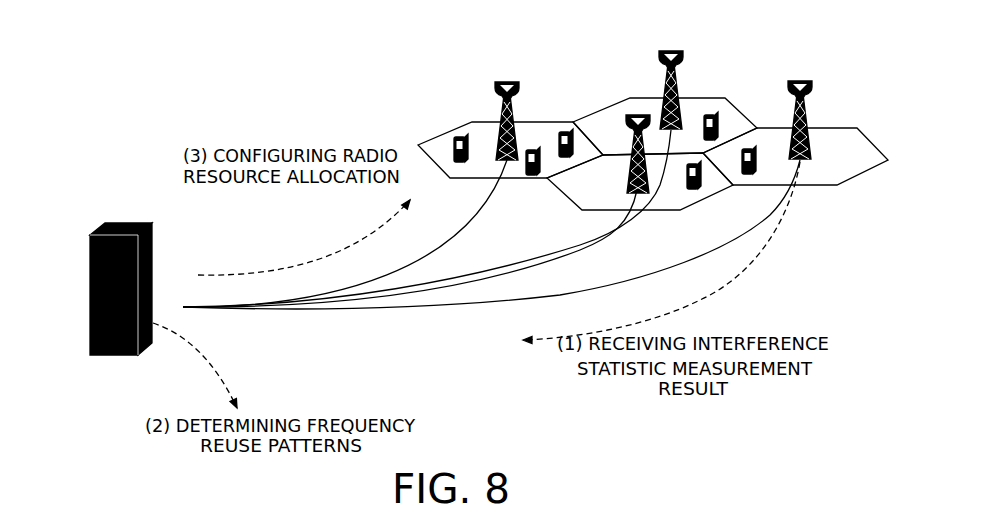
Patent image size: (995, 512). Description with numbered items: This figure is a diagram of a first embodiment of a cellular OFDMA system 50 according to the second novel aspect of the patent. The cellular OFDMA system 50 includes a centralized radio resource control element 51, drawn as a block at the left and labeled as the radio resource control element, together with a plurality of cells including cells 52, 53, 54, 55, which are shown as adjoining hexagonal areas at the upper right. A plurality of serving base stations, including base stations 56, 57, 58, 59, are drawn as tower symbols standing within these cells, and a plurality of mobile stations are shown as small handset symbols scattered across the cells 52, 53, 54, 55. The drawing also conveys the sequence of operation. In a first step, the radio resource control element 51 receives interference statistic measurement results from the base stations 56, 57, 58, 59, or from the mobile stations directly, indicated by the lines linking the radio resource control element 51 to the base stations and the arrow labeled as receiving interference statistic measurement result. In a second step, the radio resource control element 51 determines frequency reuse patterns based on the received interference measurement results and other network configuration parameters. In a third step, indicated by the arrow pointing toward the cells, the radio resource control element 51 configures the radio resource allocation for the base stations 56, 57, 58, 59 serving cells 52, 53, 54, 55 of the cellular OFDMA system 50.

The cellular OFDMA system 50 is at (279, 70).
The radio resource control element 51 is at (88, 283).
The cell 52 is at (858, 177).
The cell 53 is at (703, 200).
The cell 54 is at (547, 121).
The cell 55 is at (716, 97).
The base station 56 is at (802, 79).
The base station 57 is at (639, 113).
The base station 58 is at (508, 80).
The base station 59 is at (671, 49).